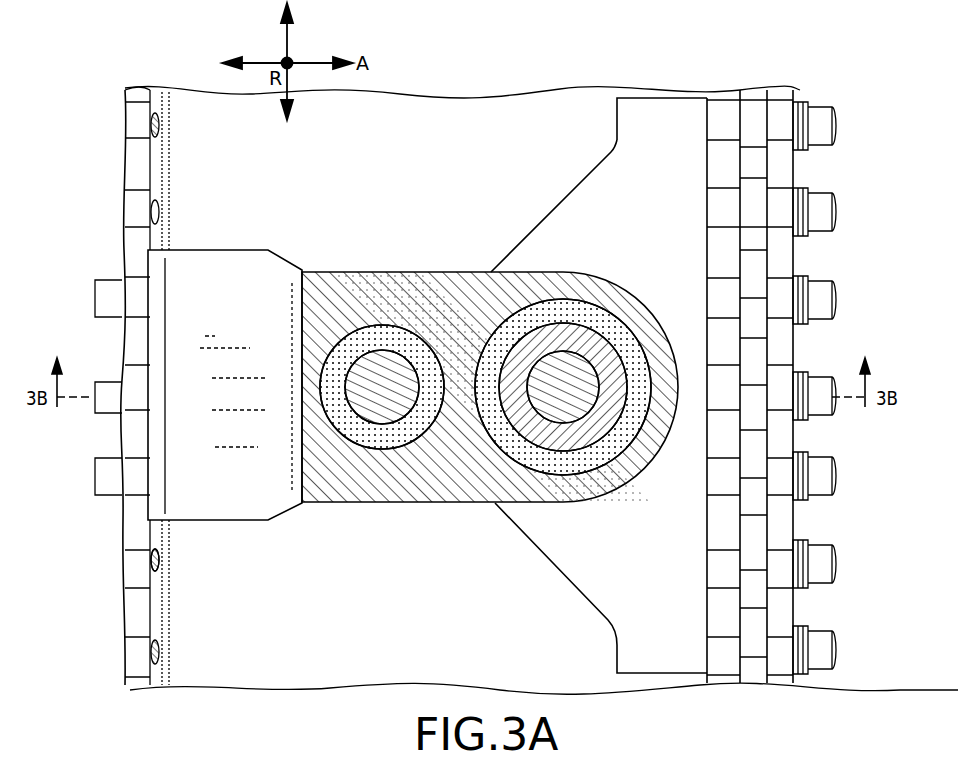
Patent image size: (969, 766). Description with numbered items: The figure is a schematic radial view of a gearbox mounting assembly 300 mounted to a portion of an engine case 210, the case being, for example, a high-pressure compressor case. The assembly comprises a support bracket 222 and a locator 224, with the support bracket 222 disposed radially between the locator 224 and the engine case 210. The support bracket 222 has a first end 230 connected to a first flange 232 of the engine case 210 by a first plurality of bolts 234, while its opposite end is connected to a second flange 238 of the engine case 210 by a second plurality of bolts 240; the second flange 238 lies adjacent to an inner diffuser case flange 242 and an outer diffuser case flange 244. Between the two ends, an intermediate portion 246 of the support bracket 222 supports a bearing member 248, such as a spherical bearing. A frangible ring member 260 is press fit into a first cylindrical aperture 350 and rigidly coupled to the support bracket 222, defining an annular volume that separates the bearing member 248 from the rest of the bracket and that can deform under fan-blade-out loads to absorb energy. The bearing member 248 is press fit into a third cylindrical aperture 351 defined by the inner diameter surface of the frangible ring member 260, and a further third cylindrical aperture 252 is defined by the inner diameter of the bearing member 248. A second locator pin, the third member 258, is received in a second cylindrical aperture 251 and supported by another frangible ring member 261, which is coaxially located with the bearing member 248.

The engine case 210 is at (573, 185).
The gearbox mounting assembly 300 is at (342, 230).
The support bracket 222 is at (253, 492).
The locator 224 is at (575, 363).
The first end 230 is at (128, 285).
The first flange 232 is at (128, 565).
The first plurality of bolts 234 is at (105, 405).
The second flange 238 is at (660, 600).
The second plurality of bolts 240 is at (812, 405).
The inner diffuser case flange 242 is at (752, 665).
The outer diffuser case flange 244 is at (780, 668).
The intermediate portion 246 is at (440, 493).
The bearing member 248 is at (480, 300).
The second cylindrical aperture 251 is at (345, 435).
The third cylindrical aperture 252 is at (603, 463).
The third member 258 is at (392, 362).
The frangible ring member 260 is at (568, 312).
The frangible ring member 261 is at (383, 332).
The first cylindrical aperture 350 is at (523, 353).
The third cylindrical aperture 351 is at (510, 420).